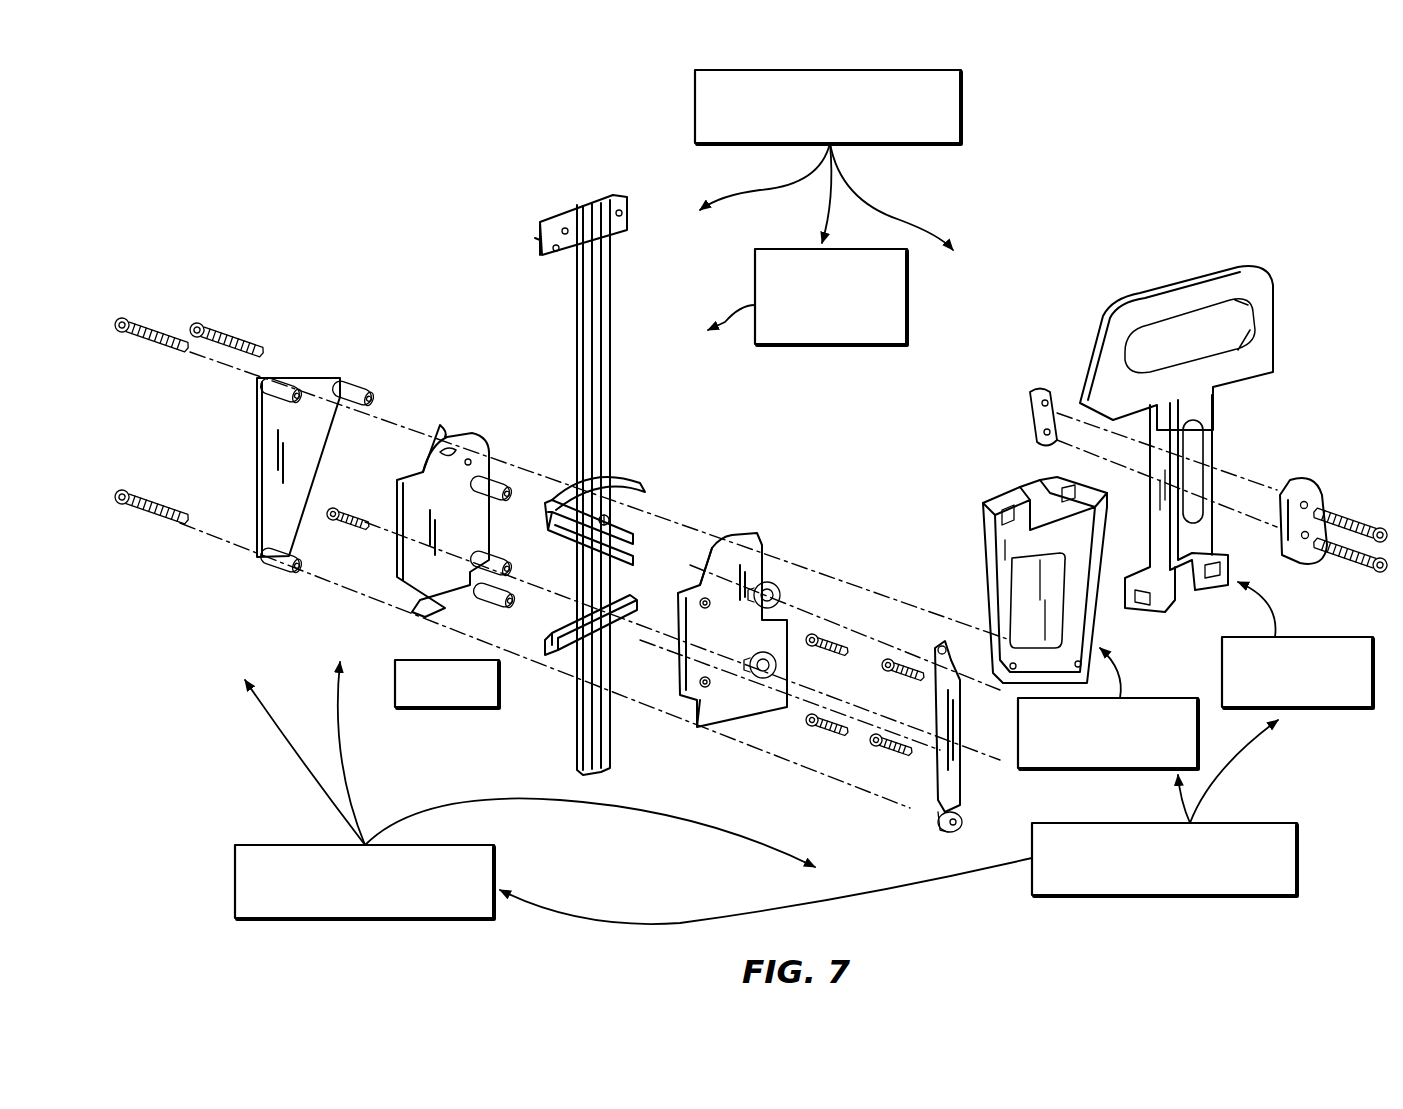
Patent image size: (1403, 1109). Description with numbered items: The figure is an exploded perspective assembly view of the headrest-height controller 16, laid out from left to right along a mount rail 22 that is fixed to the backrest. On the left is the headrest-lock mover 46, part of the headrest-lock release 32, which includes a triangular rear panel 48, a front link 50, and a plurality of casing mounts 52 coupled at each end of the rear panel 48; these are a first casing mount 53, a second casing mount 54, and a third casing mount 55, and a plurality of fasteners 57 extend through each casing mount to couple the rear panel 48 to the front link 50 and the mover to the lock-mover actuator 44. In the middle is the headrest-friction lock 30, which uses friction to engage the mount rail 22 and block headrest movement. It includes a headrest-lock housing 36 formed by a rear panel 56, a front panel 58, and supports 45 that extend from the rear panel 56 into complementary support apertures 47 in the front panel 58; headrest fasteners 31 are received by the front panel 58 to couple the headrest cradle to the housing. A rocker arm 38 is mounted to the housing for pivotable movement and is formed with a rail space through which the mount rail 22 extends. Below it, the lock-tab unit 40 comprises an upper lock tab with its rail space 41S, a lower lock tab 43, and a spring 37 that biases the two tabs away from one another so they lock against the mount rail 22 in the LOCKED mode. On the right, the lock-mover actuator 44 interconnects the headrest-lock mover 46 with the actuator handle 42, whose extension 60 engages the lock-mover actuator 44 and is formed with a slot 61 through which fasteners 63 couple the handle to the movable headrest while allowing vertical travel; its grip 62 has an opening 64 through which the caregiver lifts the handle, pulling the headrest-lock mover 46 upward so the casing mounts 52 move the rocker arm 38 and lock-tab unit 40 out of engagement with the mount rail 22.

The headrest-height controller 16 is at (961, 105).
The mount rail 22 is at (612, 290).
The headrest-friction lock 30 is at (907, 297).
The headrest fasteners 31 is at (870, 738).
The headrest-lock release 32 is at (1262, 895).
The headrest-lock housing 36 is at (802, 438).
The spring 37 is at (440, 707).
The rocker arm 38 is at (567, 482).
The lock-tab unit 40 is at (660, 578).
The rail space 41S is at (632, 527).
The actuator handle 42 is at (1320, 637).
The lower lock tab 43 is at (545, 670).
The lock-mover actuator 44 is at (1040, 768).
The supports 45 is at (460, 575).
The headrest-lock mover 46 is at (265, 845).
The support apertures 47 is at (775, 657).
The rear panel 48 is at (263, 567).
The front link 50 is at (932, 838).
The casing mounts 52 is at (337, 552).
The first casing mount 53 is at (293, 560).
The second casing mount 54 is at (282, 388).
The third casing mount 55 is at (348, 385).
The rear panel 56 is at (440, 425).
The fasteners 57 is at (156, 495).
The front panel 58 is at (775, 540).
The extension 60 is at (1217, 450).
The slot 61 is at (1202, 425).
The grip 62 is at (1275, 268).
The fasteners 63 is at (1360, 513).
The opening 64 is at (1175, 337).